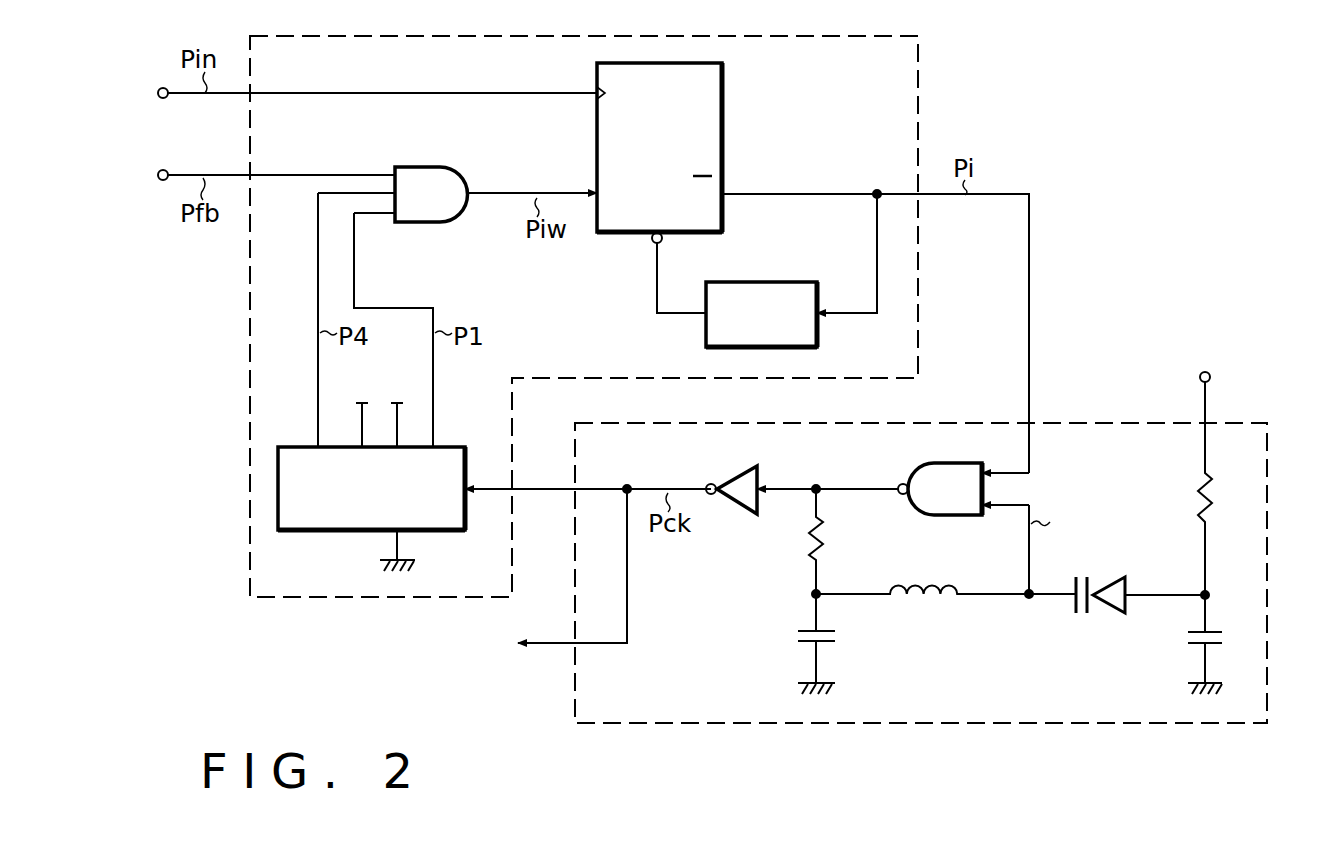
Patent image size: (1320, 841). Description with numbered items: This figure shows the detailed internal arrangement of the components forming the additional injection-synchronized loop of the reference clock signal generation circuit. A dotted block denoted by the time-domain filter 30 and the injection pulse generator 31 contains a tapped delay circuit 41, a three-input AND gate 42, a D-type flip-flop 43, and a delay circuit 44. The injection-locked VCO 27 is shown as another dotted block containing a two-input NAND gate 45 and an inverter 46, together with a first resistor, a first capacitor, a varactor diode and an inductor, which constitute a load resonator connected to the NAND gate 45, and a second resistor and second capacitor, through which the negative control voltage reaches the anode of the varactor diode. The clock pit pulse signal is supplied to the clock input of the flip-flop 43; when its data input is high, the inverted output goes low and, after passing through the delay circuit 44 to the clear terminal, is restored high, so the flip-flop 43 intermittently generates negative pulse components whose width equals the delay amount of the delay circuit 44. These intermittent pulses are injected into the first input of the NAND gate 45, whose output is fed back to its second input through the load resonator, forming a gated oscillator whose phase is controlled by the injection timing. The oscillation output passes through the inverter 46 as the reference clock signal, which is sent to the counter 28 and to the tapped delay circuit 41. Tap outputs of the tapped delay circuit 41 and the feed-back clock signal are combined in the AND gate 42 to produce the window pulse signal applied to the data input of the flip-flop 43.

The injection-locked VCO 27 is at (1097, 422).
The counter 28 is at (444, 572).
The time-domain filter 30 is at (636, 316).
The injection pulse generator 31 is at (918, 92).
The tapped delay circuit 41 is at (330, 532).
The 3-input AND gate 42 is at (433, 167).
The D-type flip-flop 43 is at (722, 118).
The delay circuit 44 is at (798, 282).
The 2-input NAND gate 45 is at (924, 463).
The inverter 46 is at (734, 476).